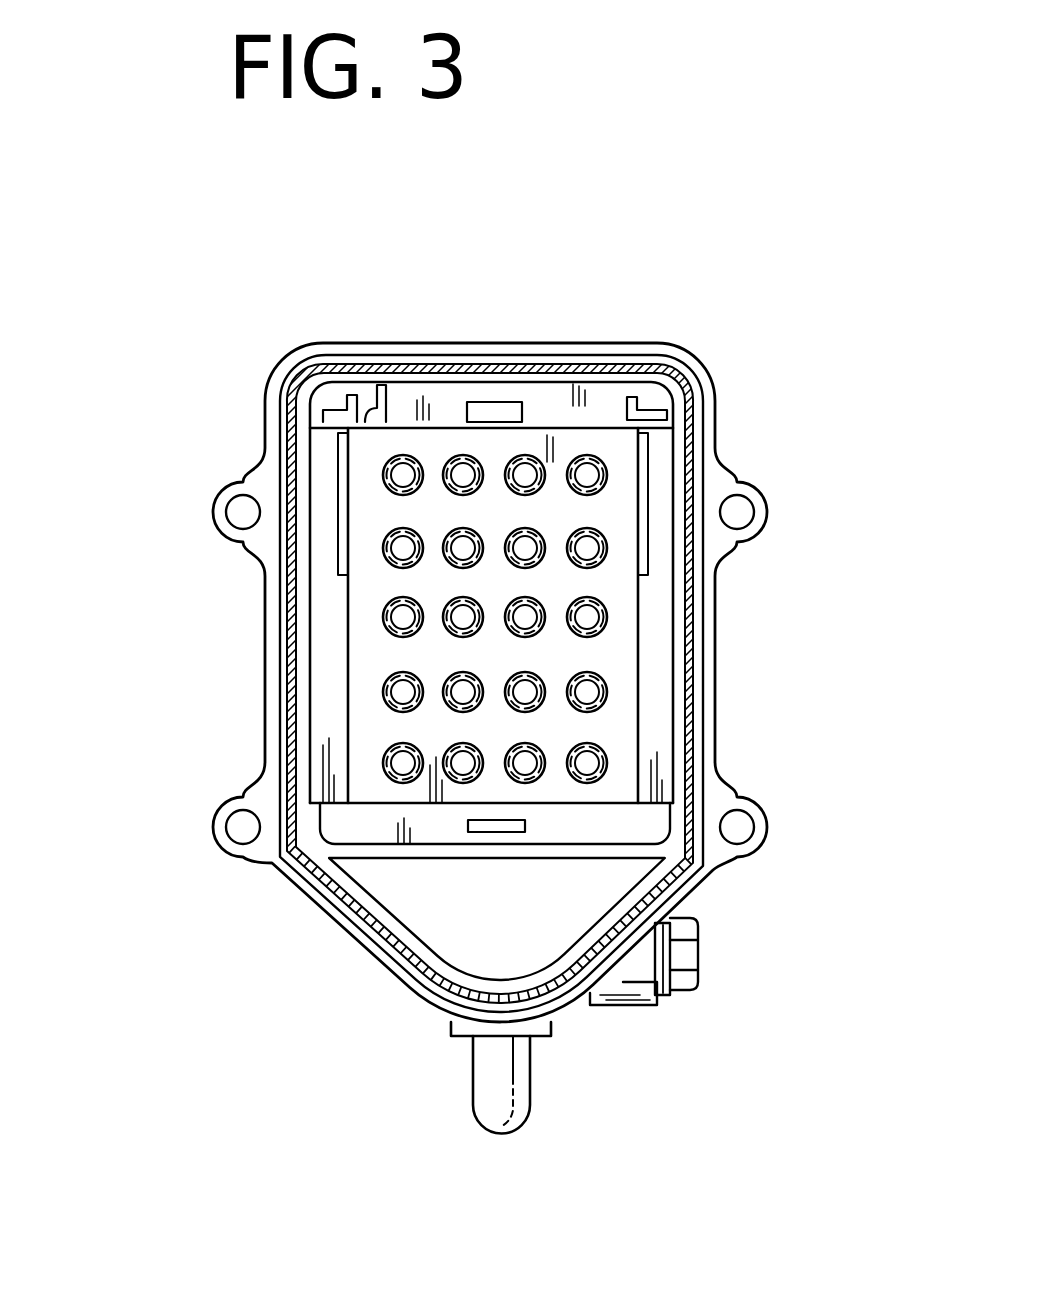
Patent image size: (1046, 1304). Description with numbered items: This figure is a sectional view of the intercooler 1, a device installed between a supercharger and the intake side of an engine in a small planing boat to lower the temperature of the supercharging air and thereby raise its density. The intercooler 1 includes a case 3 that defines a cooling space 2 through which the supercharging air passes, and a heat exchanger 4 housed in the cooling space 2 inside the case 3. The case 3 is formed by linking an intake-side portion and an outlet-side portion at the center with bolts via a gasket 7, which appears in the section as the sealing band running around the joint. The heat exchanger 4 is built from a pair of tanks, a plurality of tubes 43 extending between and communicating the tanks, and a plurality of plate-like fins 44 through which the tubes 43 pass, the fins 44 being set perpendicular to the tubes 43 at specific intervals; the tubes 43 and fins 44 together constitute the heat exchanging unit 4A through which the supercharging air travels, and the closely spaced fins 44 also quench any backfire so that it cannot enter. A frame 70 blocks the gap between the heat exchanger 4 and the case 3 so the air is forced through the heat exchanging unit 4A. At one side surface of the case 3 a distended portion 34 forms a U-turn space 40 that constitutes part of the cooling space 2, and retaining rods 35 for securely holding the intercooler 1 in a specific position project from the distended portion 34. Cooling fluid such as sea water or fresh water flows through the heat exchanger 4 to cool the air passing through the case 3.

The intercooler 1 is at (745, 342).
The cooling space 2 is at (662, 733).
The case 3 is at (715, 538).
The heat exchanger 4 is at (597, 520).
The heat exchanging unit 4A is at (625, 655).
The gasket 7 is at (465, 363).
The distended portion 34 is at (366, 950).
The retaining rod 35 is at (507, 1083).
The U-turn space 40 is at (557, 912).
The tube 43 is at (583, 462).
The fin 44 is at (373, 652).
The frame 70 is at (330, 593).